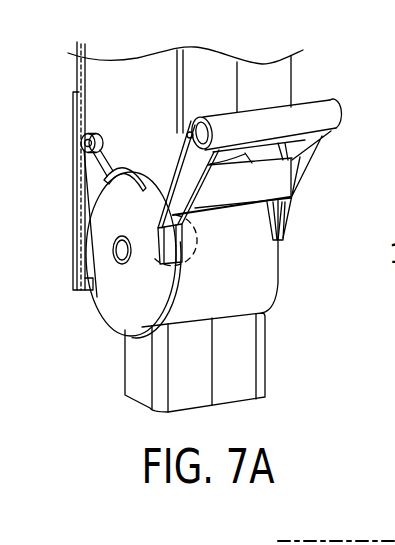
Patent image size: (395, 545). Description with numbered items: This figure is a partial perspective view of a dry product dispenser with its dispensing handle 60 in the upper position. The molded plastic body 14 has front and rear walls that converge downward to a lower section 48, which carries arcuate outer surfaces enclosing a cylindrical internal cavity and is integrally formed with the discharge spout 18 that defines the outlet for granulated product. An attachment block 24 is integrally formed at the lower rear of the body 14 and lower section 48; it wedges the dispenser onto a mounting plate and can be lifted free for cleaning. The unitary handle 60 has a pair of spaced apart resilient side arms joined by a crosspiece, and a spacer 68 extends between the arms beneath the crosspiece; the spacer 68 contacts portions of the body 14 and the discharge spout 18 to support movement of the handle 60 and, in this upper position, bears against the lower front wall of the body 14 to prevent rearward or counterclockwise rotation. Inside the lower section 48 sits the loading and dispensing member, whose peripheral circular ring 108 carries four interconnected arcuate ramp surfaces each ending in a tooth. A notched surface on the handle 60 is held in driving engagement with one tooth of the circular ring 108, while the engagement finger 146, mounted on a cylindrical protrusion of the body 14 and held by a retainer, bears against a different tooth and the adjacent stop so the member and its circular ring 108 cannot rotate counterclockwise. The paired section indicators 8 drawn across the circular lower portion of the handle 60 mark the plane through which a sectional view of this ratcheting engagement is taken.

The body 14 is at (207, 77).
The attachment block 24 is at (78, 285).
The engagement finger 146 is at (110, 173).
The cam disc 8 is at (143, 209).
The circular ring 108 is at (128, 152).
The dispensing handle 60 is at (337, 118).
The spacer 68 is at (272, 178).
The lower section 48 is at (284, 276).
The discharge spout 18 is at (237, 357).